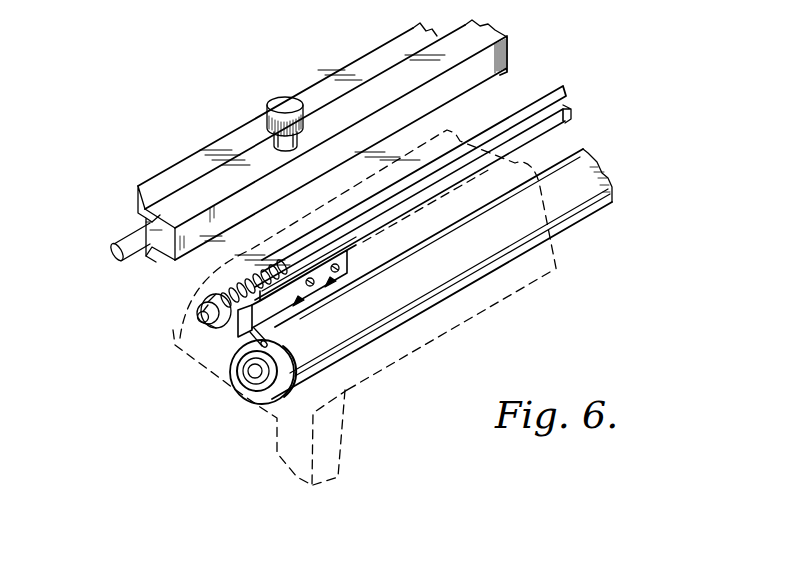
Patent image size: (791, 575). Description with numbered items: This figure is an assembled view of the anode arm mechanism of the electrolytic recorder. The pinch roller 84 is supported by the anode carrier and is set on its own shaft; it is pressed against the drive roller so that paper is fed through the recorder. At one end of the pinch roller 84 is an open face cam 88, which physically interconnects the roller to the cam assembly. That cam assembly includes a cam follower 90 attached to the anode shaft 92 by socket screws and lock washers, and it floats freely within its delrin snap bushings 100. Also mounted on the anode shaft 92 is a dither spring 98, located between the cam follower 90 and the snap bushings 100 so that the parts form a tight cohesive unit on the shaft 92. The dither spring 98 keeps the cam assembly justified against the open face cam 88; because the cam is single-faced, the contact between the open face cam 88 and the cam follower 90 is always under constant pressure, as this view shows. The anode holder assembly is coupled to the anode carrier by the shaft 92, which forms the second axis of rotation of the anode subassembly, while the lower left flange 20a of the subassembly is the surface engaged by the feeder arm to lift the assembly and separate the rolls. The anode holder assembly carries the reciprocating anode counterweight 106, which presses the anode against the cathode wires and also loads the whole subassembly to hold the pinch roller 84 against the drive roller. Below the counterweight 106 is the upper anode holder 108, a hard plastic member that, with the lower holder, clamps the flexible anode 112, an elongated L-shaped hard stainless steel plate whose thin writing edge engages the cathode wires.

The lower left flange 20a is at (347, 418).
The pinch roller 84 is at (582, 200).
The open face cam 88 is at (264, 398).
The cam follower 90 is at (244, 333).
The anode shaft 92 is at (200, 317).
The dither spring 98 is at (227, 281).
The snap bushings 100 is at (207, 297).
The anode counterweight 106 is at (400, 77).
The upper anode holder 108 is at (238, 143).
The flexible anode 112 is at (140, 255).